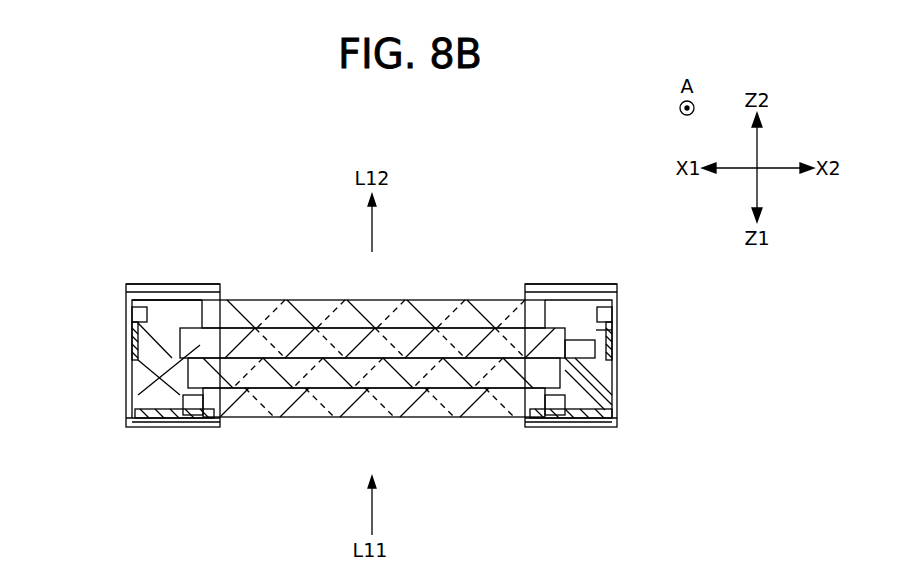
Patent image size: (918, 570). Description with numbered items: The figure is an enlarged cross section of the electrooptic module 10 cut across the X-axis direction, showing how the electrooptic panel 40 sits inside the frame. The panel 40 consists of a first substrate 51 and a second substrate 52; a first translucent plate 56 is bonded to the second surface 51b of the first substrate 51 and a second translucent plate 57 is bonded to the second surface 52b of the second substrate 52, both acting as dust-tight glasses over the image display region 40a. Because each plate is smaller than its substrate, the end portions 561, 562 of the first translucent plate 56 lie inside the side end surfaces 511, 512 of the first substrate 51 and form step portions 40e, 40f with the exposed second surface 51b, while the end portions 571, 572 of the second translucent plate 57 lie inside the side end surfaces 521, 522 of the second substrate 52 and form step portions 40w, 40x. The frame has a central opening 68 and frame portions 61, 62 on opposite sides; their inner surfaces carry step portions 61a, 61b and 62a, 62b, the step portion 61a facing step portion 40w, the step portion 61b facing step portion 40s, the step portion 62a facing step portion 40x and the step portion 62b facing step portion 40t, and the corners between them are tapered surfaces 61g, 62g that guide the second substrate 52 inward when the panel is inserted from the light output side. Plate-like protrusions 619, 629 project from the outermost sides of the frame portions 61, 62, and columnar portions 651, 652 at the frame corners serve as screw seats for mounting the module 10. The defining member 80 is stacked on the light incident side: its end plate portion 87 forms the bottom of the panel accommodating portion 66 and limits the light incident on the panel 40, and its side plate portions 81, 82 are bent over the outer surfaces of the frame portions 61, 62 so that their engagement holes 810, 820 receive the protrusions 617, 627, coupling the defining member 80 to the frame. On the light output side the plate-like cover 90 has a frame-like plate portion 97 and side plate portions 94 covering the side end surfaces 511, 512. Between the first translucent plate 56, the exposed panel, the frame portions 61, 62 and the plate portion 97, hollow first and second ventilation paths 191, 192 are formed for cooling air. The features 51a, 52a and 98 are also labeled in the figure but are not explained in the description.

The electrooptic module 10 is at (631, 203).
The electrooptic panel 40 is at (448, 236).
The image display region 40a is at (220, 284).
The step portion 40e is at (452, 311).
The step portion 40f is at (218, 316).
The step portion 40s is at (406, 313).
The step portion 40t is at (262, 313).
The step portion 40w is at (526, 418).
The step portion 40x is at (225, 419).
The first substrate 51 is at (388, 300).
The first electrode lower portion 51a is at (395, 392).
The second surface 51b is at (316, 316).
The second substrate 52 is at (415, 328).
The second electrode lower portion 52a is at (418, 392).
The second surface 52b is at (297, 417).
The first translucent plate 56 is at (323, 300).
The second translucent plate 57 is at (328, 416).
The frame portion 61 is at (606, 381).
The step portion 61a is at (586, 411).
The step portion 61b is at (598, 355).
The tapered surface 61g is at (512, 416).
The frame portion 62 is at (142, 380).
The step portion 62a is at (176, 400).
The step portion 62b is at (152, 368).
The tapered surface 62g is at (245, 419).
The panel accommodating portion 66 is at (190, 416).
The opening 68 is at (212, 421).
The defining member 80 is at (541, 432).
The side plate portion 81 is at (612, 349).
The side plate portion 82 is at (132, 341).
The end plate portion 87 is at (552, 426).
The plate-like cover 90 is at (139, 278).
The side plate portion 94 is at (132, 313).
The frame-like plate portion 97 is at (174, 294).
The cover opening 98 is at (236, 312).
The first ventilation path 191 is at (570, 294).
The second ventilation path 192 is at (152, 294).
The side end surface 511 is at (600, 333).
The side end surface 512 is at (152, 352).
The side end surface 521 is at (605, 419).
The side end surface 522 is at (145, 416).
The end portion 561 is at (556, 292).
The end portion 562 is at (200, 291).
The end portion 571 is at (570, 426).
The end portion 572 is at (208, 418).
The protrusion 617 is at (612, 366).
The plate-like protrusion 619 is at (611, 294).
The protrusion 627 is at (133, 352).
The plate-like protrusion 629 is at (128, 300).
The columnar portion 651 is at (592, 294).
The columnar portion 652 is at (160, 294).
The engagement hole 810 is at (618, 401).
The engagement hole 820 is at (128, 411).